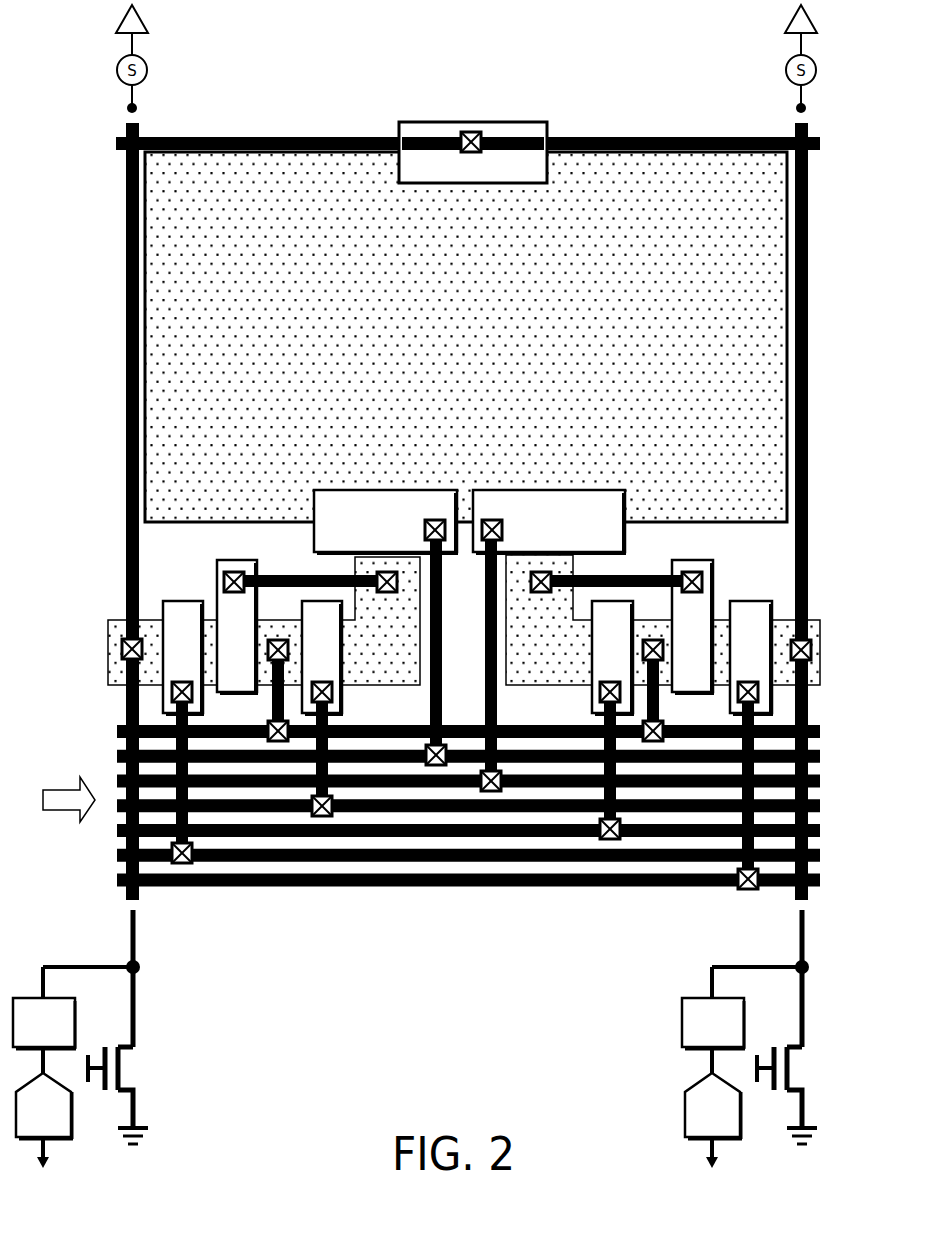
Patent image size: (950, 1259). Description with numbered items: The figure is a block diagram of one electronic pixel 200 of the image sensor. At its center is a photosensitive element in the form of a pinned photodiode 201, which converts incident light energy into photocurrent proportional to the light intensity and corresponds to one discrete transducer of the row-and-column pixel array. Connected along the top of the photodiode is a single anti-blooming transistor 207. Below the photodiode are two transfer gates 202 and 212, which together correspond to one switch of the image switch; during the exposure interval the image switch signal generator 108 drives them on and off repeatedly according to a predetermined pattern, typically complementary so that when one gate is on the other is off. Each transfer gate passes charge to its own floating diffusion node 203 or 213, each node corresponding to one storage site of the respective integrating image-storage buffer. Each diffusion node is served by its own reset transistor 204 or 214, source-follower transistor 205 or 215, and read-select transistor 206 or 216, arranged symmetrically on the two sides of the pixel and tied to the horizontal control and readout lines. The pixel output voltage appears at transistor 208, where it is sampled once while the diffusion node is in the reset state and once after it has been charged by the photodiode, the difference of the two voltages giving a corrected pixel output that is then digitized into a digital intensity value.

The pixel 200 is at (619, 108).
The pinned photodiode 201 is at (466, 337).
The transfer gate 202 is at (549, 640).
The floating diffusion node 203 is at (663, 620).
The reset transistor 204 is at (613, 720).
The source-follower transistor 205 is at (622, 626).
The read-select transistor 206 is at (751, 745).
The anti-blooming transistor 207 is at (473, 152).
The transistor 208 is at (120, 1068).
The image switch signal generator 108 is at (789, 1068).
The transfer gate 212 is at (386, 627).
The floating diffusion node 213 is at (264, 621).
The reset transistor 214 is at (322, 708).
The source-follower transistor 215 is at (307, 626).
The read-select transistor 216 is at (183, 732).